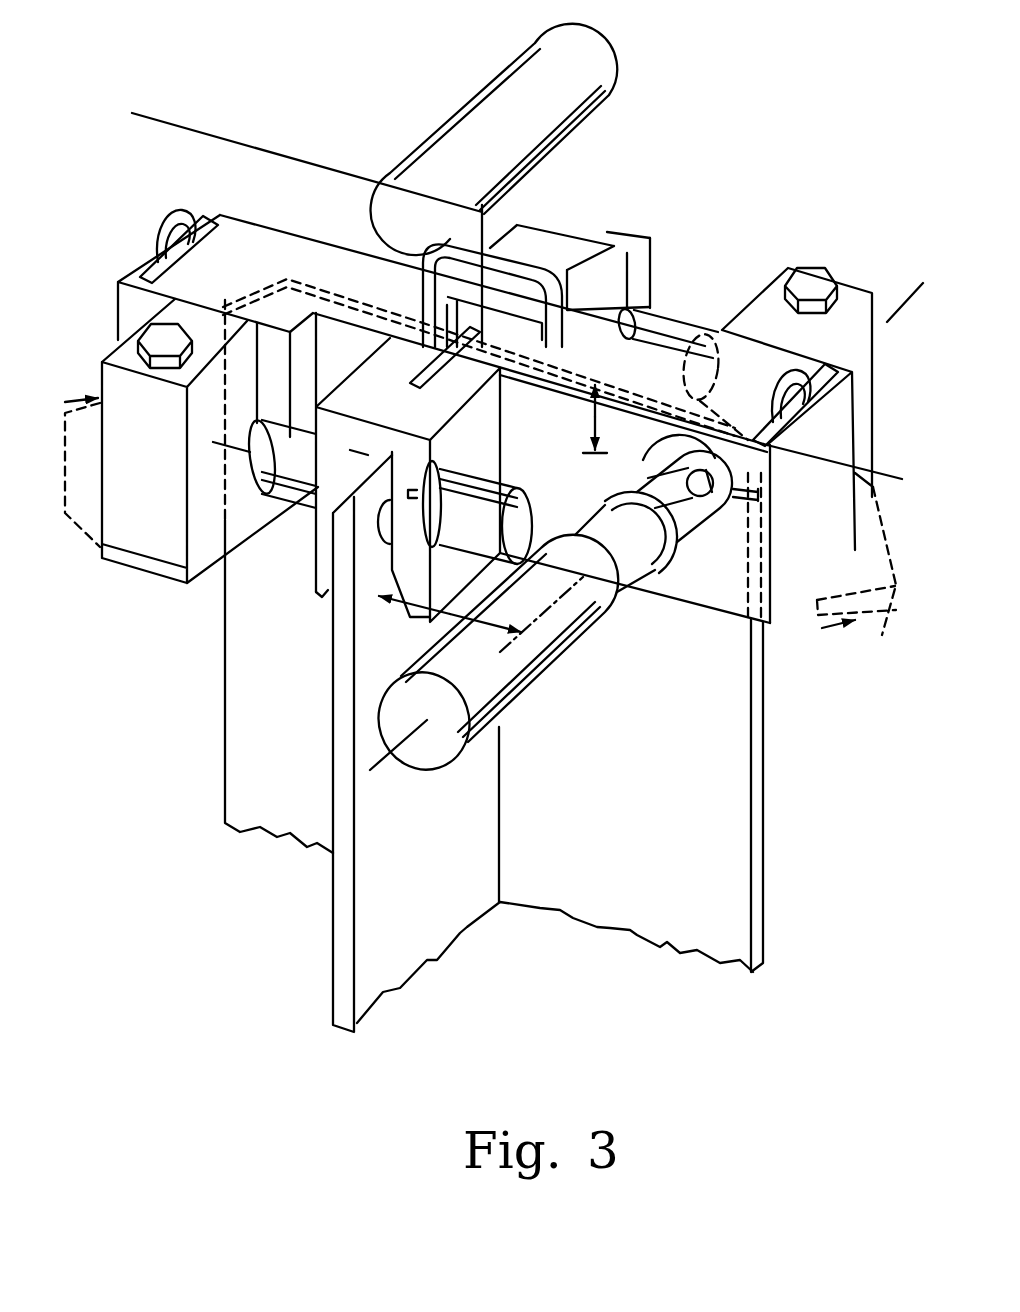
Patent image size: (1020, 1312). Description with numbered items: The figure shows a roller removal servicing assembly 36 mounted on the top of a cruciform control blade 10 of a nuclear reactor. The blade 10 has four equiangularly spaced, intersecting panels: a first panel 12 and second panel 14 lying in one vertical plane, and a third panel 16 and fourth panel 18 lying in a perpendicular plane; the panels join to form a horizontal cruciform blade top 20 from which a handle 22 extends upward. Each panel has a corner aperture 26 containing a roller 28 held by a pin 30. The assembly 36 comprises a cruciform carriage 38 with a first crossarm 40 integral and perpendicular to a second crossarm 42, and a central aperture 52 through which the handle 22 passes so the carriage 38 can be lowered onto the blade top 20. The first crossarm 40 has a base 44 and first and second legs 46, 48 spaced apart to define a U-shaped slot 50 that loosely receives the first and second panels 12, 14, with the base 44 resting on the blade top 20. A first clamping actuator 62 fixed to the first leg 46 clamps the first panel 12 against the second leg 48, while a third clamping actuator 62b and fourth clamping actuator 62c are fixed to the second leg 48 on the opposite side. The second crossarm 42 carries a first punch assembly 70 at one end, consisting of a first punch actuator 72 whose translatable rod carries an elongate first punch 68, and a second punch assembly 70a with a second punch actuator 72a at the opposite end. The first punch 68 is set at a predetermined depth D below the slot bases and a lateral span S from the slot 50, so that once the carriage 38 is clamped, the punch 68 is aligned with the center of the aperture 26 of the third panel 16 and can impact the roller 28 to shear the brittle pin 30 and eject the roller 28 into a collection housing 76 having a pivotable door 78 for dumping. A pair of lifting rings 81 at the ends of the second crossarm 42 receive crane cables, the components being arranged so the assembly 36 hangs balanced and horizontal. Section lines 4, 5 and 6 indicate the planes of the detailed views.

The section line 4- 4 is at (132, 113).
The section line 5- 5 is at (213, 442).
The section line 6- 6 is at (923, 283).
The control blade 10 is at (633, 920).
The first panel 12 is at (373, 927).
The second panel 14 is at (655, 280).
The third panel 16 is at (740, 852).
The fourth panel 18 is at (245, 665).
The blade top 20 is at (614, 238).
The handle 22 is at (568, 255).
The aperture 26 is at (653, 453).
The roller 28 is at (708, 521).
The pin 30 is at (765, 487).
The roller removal servicing assembly 36 is at (574, 228).
The cruciform carriage 38 is at (265, 227).
The first crossarm 40 is at (478, 414).
The second crossarm 42 is at (521, 398).
The base 44 is at (357, 424).
The first leg 46 is at (323, 595).
The second leg 48 is at (412, 604).
The first U-shaped slot 50 is at (360, 448).
The central aperture 52 is at (408, 290).
The first clamping actuator 62 is at (290, 497).
The third clamping actuator 62b is at (447, 549).
The fourth clamping actuator 62c is at (655, 318).
The first punch 68 is at (683, 557).
The first punch assembly 70 is at (567, 670).
The second punch assembly 70a is at (397, 168).
The first punch actuator 72 is at (510, 717).
The second punch actuator 72a is at (597, 72).
The collection housing 76 is at (845, 412).
The pivotable door 78 is at (480, 531).
The lifting rings 81 is at (157, 240).
The depth D is at (592, 412).
The lateral span S is at (443, 619).